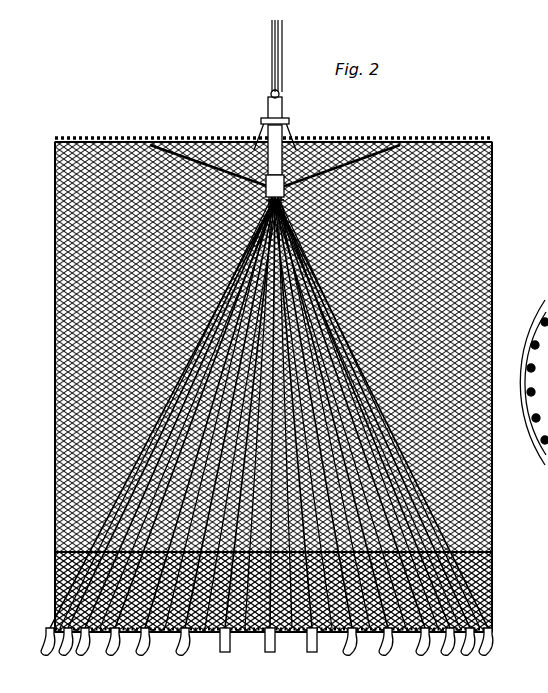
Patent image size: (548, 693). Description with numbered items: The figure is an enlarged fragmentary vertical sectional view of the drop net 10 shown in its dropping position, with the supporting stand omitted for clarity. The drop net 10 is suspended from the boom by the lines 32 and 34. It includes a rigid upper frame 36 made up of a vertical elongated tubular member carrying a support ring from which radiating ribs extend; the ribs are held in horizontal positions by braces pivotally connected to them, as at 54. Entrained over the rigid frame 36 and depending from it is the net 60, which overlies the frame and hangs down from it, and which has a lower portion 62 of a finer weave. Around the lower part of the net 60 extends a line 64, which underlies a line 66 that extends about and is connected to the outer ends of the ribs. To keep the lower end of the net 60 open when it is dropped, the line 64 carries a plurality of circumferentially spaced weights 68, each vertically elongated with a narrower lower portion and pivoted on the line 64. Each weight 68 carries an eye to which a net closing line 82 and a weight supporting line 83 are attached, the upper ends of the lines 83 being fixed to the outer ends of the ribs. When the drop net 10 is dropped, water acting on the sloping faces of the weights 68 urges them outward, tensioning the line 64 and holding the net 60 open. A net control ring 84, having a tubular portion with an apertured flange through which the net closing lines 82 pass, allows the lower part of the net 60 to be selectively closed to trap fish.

The drop net 10 is at (497, 132).
The line 32 is at (271, 32).
The line 34 is at (284, 36).
The rigid upper frame 36 is at (303, 116).
The pivotal connection 54 is at (397, 145).
The net 60 is at (493, 215).
The lower portion of net 62 is at (493, 551).
The line 64 is at (290, 632).
The line 66 is at (493, 141).
The weights 68 is at (233, 651).
The net closing line 82 is at (296, 485).
The weight supporting line 83 is at (56, 145).
The net control ring 84 is at (265, 100).